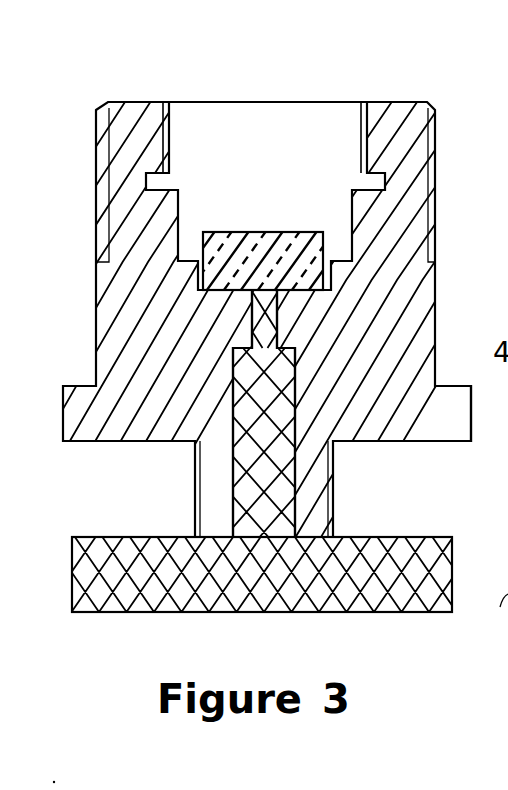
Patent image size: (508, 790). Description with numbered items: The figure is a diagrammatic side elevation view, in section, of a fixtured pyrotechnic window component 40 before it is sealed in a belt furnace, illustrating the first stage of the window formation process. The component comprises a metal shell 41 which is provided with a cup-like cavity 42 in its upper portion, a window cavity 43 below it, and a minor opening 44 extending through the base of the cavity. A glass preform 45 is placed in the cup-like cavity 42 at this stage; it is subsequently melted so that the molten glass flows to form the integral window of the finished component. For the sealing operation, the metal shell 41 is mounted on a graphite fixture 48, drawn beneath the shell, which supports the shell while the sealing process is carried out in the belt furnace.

The window component 40 is at (254, 341).
The metal shell 41 is at (471, 433).
The cup-like cavity 42 is at (172, 127).
The window cavity 43 is at (245, 270).
The minor opening 44 is at (280, 316).
The glass preform 45 is at (298, 233).
The graphite fixture 48 is at (452, 582).